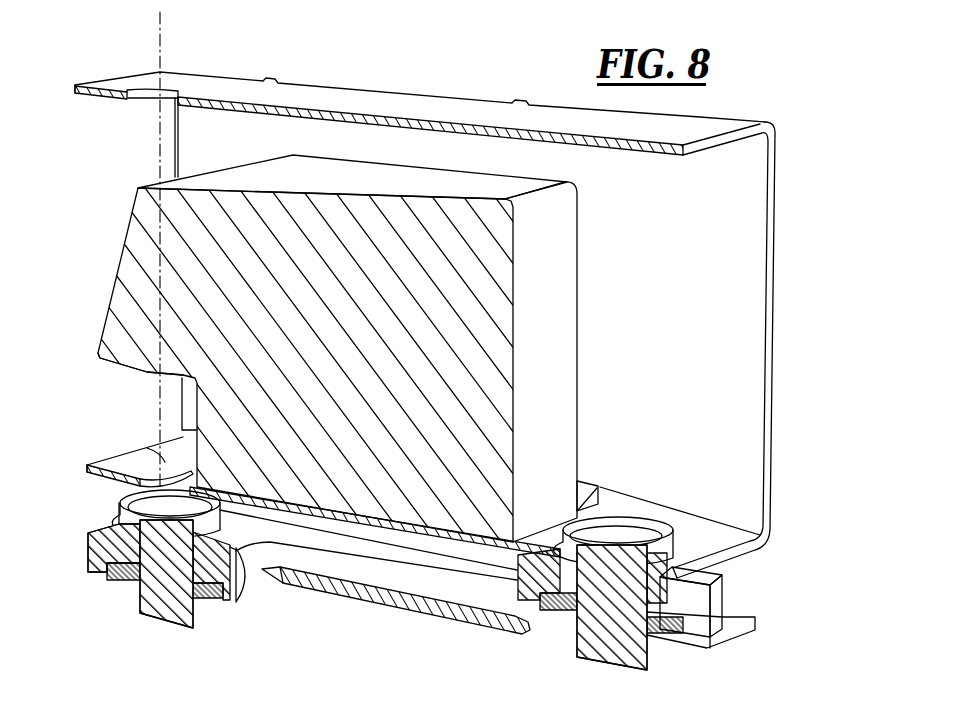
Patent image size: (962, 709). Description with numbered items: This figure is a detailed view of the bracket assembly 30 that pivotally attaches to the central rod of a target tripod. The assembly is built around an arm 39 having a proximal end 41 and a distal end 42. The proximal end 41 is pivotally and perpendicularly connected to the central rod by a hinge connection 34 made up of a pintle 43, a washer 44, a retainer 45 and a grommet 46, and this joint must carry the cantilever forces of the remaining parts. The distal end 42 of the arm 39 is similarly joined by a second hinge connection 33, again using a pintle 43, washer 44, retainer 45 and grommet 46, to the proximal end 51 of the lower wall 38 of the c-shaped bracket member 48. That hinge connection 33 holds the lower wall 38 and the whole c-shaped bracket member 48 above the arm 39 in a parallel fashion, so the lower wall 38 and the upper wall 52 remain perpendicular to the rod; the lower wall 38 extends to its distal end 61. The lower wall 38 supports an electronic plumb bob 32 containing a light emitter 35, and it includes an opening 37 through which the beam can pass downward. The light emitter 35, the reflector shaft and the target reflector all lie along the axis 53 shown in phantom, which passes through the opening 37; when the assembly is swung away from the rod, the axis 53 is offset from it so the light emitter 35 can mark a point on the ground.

The bracket assembly 30 is at (442, 299).
The electronic plumb bob 32 is at (578, 264).
The hinge connection 33 is at (691, 661).
The hinge connection 34 is at (214, 604).
The light emitter 35 is at (131, 372).
The opening 37 is at (143, 452).
The lower wall 38 is at (474, 550).
The arm 39 is at (382, 612).
The proximal end 41 is at (100, 520).
The distal end 42 is at (730, 640).
The pintle 43 is at (140, 600).
The washer 44 is at (100, 543).
The retainer 45 is at (112, 578).
The grommet 46 is at (123, 495).
The c-shaped bracket member 48 is at (771, 318).
The proximal end 51 is at (703, 545).
The upper wall 52 is at (408, 105).
The axis 53 is at (160, 137).
The distal end 61 is at (147, 448).